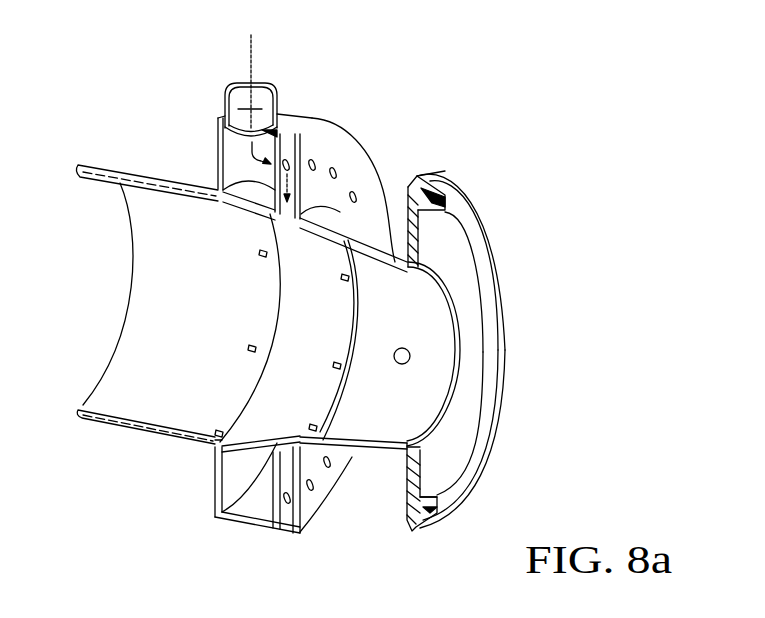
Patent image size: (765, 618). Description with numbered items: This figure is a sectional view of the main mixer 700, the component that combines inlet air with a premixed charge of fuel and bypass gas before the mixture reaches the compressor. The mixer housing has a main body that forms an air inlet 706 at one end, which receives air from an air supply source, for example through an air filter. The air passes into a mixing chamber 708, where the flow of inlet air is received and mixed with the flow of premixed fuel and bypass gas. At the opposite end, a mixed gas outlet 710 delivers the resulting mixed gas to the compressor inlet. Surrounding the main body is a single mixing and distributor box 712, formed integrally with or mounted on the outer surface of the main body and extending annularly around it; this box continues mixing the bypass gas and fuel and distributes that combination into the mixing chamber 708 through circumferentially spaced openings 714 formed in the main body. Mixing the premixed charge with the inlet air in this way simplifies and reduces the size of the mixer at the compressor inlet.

The main mixer 700 is at (252, 50).
The air inlet 706 is at (156, 303).
The mixing chamber 708 is at (312, 401).
The mixed gas outlet 710 is at (450, 365).
The single mixing and distributor box 712 is at (190, 157).
The circumferentially spaced openings 714 is at (330, 207).